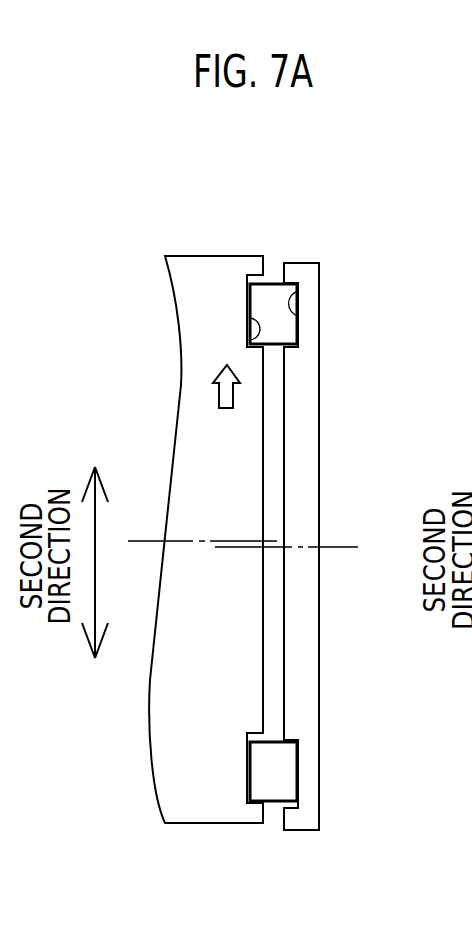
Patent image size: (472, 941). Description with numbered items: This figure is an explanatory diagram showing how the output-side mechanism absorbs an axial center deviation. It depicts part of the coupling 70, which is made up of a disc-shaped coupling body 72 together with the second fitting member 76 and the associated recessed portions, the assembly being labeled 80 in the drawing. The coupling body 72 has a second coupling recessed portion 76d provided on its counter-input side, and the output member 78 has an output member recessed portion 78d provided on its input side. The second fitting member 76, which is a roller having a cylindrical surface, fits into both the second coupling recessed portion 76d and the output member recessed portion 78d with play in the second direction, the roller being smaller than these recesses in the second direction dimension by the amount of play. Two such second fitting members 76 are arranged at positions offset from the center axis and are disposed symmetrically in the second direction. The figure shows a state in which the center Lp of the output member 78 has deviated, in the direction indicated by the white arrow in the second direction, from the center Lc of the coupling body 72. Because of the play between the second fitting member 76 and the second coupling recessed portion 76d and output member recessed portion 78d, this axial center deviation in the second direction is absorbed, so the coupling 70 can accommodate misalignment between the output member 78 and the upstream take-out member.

The coupling 70 is at (297, 218).
The head unit assembly (underlined designation) 80 is at (401, 177).
The coupling body 72 is at (310, 263).
The second fitting member 76 is at (273, 308).
The output member 78 is at (187, 278).
The output member recessed portion 78d is at (247, 343).
The second coupling recessed portion 76d is at (292, 292).
The center of the output member Lp is at (147, 540).
The center of the coupling body Lc is at (338, 546).